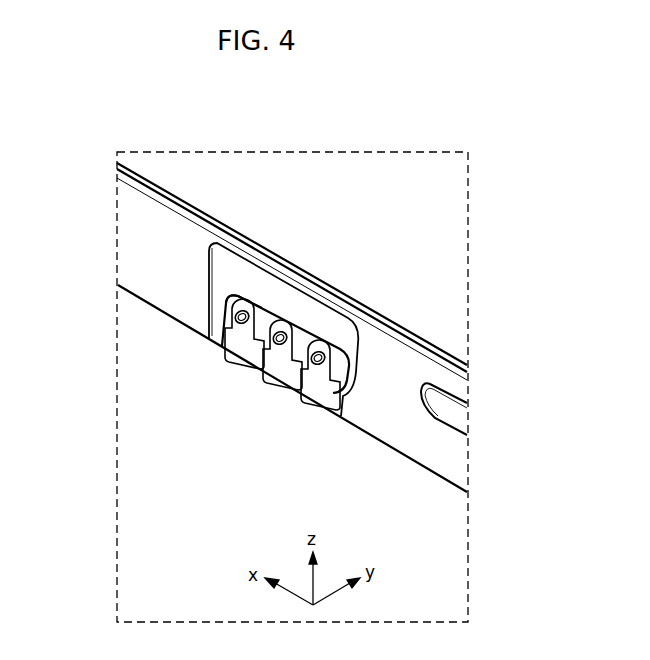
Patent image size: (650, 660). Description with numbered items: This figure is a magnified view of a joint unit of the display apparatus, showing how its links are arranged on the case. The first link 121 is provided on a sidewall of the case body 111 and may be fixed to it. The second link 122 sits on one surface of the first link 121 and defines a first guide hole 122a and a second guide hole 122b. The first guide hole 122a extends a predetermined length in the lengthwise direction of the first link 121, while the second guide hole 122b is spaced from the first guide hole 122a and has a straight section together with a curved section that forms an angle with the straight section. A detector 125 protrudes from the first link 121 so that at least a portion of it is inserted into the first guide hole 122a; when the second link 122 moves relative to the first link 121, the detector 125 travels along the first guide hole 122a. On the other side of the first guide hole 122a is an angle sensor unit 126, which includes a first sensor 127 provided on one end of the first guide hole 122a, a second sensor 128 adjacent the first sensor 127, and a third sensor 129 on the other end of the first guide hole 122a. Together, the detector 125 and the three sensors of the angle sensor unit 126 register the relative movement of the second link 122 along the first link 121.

The display panel 111 is at (443, 268).
The first link 121 is at (153, 282).
The second link 122 is at (382, 421).
The first guide hole 122a is at (233, 297).
The second guide hole 122b is at (448, 413).
The detector 125 is at (341, 396).
The angle sensor unit 126 is at (241, 397).
The first sensor 127 is at (315, 398).
The second sensor 128 is at (279, 377).
The third sensor 129 is at (243, 352).